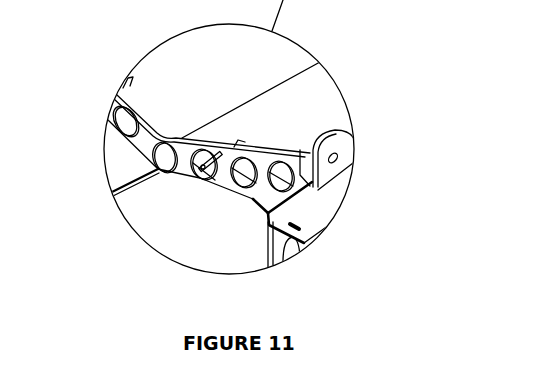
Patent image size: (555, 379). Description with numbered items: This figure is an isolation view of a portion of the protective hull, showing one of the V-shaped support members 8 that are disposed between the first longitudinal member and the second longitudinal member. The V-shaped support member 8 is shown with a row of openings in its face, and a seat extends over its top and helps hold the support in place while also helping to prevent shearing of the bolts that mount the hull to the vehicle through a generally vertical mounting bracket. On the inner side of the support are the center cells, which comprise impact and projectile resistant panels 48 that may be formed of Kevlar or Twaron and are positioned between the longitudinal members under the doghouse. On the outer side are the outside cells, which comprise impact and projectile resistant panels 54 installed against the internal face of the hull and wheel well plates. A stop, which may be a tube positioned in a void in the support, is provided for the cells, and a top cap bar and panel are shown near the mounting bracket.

The V-shaped support member 8 is at (118, 98).
The impact and projectile resistant panel 48 is at (251, 99).
The impact and projectile resistant panel 54 is at (152, 197).